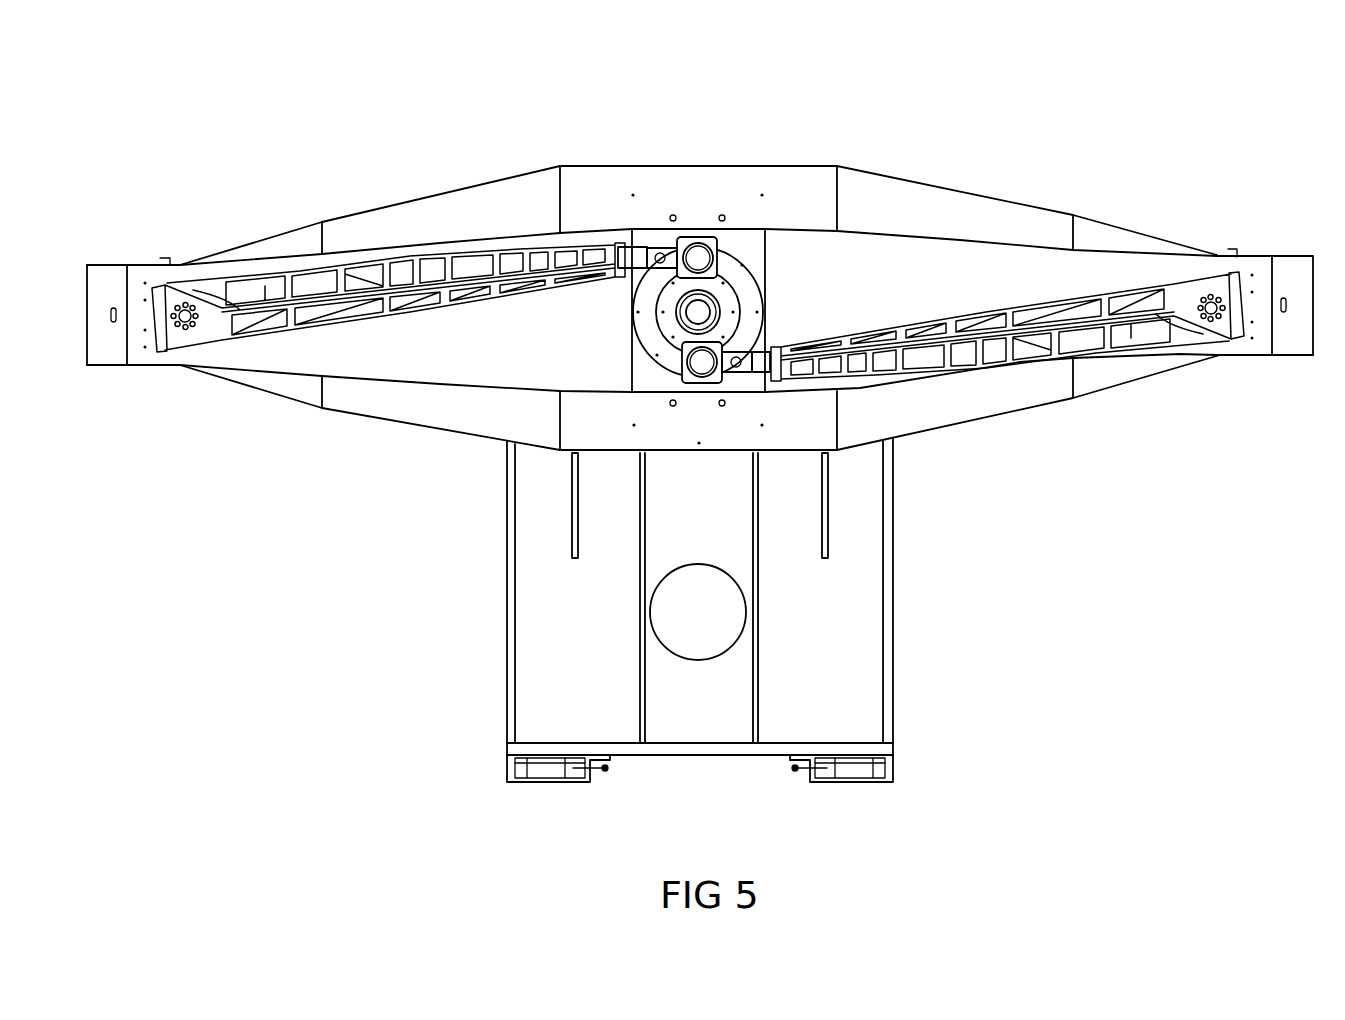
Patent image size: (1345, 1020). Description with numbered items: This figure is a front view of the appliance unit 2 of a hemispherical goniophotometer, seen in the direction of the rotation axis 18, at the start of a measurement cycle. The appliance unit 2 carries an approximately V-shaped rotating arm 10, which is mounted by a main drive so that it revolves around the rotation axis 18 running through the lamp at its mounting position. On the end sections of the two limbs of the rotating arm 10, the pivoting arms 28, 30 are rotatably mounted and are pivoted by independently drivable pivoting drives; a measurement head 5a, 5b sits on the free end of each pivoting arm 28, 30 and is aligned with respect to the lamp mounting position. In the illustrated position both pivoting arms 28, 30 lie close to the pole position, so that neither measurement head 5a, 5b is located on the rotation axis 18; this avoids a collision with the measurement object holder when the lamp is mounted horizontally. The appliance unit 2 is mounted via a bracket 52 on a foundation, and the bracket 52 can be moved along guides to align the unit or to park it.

The appliance unit 2 is at (812, 152).
The rotating arm 10 is at (1123, 222).
The rotation axis 18 is at (712, 306).
The pivoting arm 28 is at (437, 288).
The pivoting arm 30 is at (1035, 348).
The bracket 52 is at (893, 672).
The measurement head 5a is at (698, 237).
The measurement head 5b is at (692, 370).